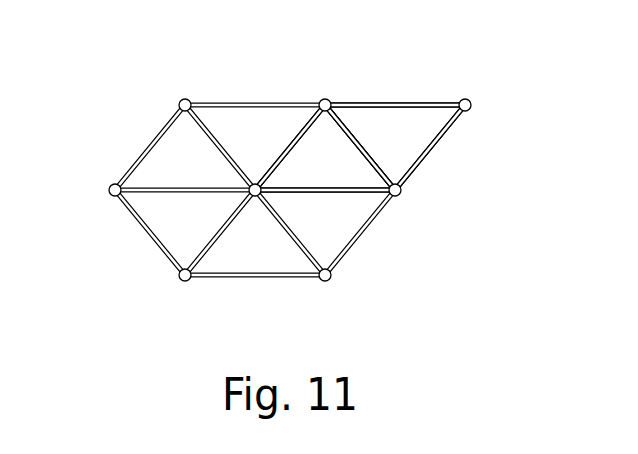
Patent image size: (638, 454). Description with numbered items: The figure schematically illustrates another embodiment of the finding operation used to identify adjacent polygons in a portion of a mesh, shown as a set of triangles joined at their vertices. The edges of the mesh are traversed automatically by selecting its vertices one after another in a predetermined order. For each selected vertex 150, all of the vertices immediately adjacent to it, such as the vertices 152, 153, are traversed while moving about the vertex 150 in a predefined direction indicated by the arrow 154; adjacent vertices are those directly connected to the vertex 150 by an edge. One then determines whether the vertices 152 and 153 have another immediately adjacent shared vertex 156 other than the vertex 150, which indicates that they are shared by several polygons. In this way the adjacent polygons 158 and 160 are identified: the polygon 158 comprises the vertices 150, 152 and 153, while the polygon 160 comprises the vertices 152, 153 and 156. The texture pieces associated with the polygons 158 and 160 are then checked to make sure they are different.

The selected vertex 150 is at (256, 196).
The adjacent vertex 152 is at (401, 192).
The adjacent vertex 153 is at (327, 99).
The arrow 154 is at (121, 102).
The shared vertex 156 is at (471, 106).
The polygon 158 is at (308, 143).
The polygon 160 is at (395, 117).